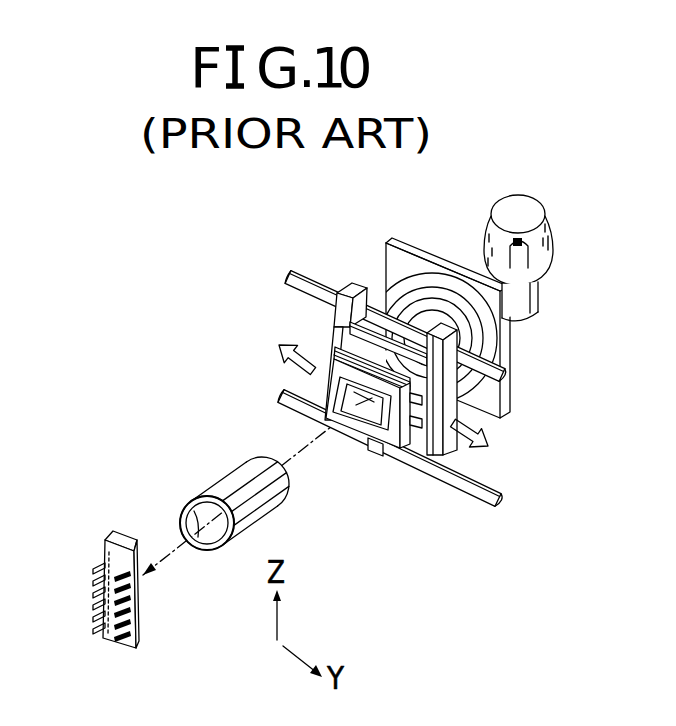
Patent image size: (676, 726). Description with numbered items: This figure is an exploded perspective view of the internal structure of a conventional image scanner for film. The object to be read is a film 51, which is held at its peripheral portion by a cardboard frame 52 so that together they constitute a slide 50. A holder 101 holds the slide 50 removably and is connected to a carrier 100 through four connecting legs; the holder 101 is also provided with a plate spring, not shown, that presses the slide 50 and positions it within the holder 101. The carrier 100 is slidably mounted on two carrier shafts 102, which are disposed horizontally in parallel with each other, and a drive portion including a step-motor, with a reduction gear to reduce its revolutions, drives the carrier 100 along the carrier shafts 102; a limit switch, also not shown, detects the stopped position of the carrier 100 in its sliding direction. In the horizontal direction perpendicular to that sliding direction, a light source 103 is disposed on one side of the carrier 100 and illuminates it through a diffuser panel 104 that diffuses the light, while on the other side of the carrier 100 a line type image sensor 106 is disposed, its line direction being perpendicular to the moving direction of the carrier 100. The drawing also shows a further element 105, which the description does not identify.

The slide 50 is at (376, 444).
The film 51 is at (364, 400).
The cardboard frame 52 is at (338, 412).
The carrier 100 is at (470, 393).
The holder 101 is at (322, 423).
The carrier shafts 102 is at (505, 374).
The light source 103 is at (540, 241).
The diffuser panel 104 is at (423, 292).
The cylindrical lens 105 is at (203, 514).
The line type image sensor 106 is at (104, 543).